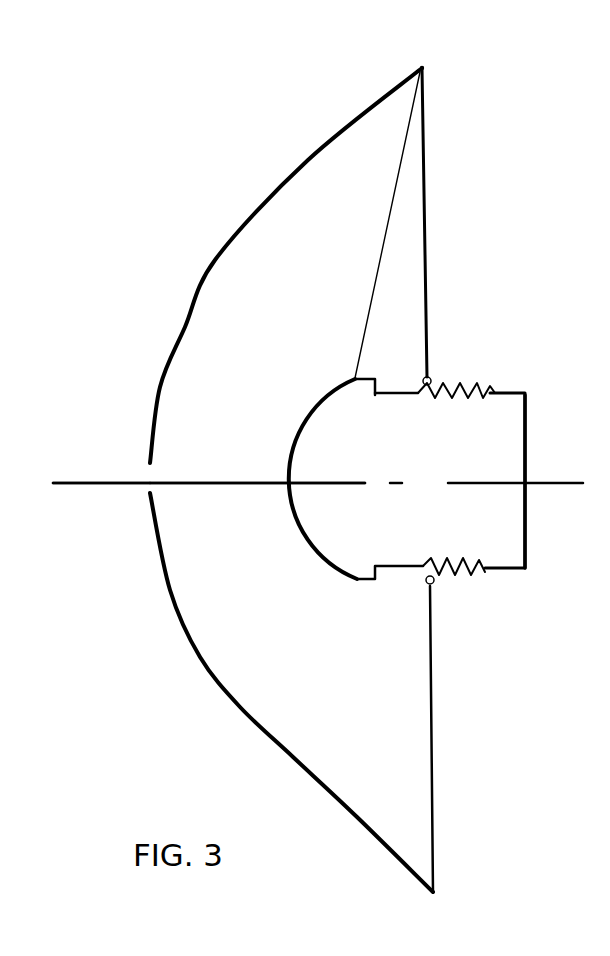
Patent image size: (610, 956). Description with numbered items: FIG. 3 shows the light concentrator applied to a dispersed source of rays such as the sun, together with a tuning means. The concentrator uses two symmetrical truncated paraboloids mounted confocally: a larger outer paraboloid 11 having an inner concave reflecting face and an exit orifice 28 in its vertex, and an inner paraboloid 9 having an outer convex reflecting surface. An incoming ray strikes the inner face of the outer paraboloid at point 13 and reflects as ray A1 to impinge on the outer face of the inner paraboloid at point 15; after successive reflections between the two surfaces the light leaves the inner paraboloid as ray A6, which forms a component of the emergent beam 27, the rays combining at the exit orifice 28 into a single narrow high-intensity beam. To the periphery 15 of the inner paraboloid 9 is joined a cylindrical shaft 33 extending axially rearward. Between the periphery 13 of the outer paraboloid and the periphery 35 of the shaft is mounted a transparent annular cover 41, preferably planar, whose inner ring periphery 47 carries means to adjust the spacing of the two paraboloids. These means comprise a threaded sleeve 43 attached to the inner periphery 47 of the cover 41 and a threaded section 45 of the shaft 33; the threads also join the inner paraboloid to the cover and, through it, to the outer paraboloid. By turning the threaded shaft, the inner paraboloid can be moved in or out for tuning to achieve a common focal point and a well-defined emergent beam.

The inner paraboloid 9 is at (298, 432).
The outer paraboloid 11 is at (185, 327).
The periphery of the outer paraboloid 13 is at (422, 68).
The periphery of the inner paraboloid 15 is at (355, 378).
The emergent beam 27 is at (95, 482).
The exit orifice 28 is at (150, 492).
The cylindrical shaft 33 is at (530, 526).
The periphery of the shaft 35 is at (377, 397).
The transparent annular cover 41 is at (427, 222).
The threaded sleeve 43 is at (483, 383).
The threaded section of the shaft 45 is at (472, 397).
The inner ring periphery of the transparent cover 47 is at (431, 376).
The ray A1 is at (378, 241).
The ray A6 is at (218, 482).